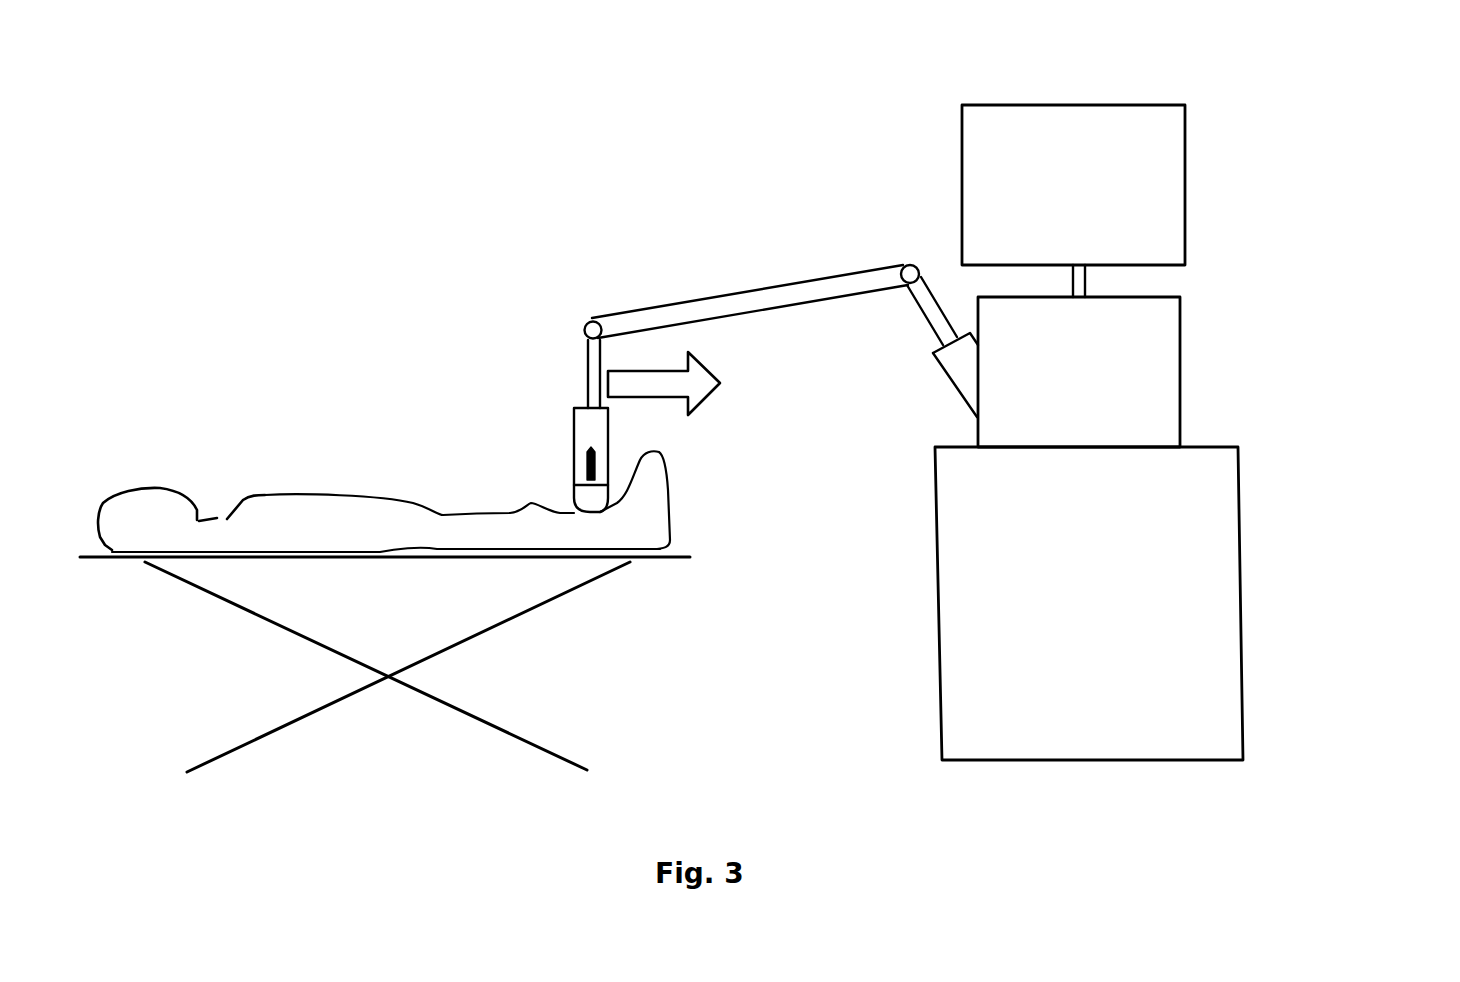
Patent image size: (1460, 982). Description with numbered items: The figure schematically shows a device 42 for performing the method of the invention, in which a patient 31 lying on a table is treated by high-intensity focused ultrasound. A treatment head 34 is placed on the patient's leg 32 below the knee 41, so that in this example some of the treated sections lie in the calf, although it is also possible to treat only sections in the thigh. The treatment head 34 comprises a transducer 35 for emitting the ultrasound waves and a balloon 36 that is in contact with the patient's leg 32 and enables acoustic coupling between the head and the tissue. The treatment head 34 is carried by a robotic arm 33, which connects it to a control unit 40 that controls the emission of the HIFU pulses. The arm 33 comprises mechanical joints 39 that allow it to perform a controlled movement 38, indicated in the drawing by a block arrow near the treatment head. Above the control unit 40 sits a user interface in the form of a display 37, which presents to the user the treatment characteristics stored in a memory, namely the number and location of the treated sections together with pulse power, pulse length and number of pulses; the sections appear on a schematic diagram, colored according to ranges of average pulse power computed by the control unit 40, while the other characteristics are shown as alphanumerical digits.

The patient 31 is at (250, 492).
The patient's leg 32 is at (493, 507).
The robotic arm 33 is at (675, 293).
The treatment head 34 is at (620, 426).
The transducer 35 is at (593, 449).
The balloon 36 is at (571, 500).
The display 37 is at (963, 152).
The controlled movement 38 is at (698, 412).
The mechanical joints 39 is at (912, 262).
The control unit 40 is at (1190, 297).
The knee 41 is at (530, 493).
The device 42 is at (1232, 373).